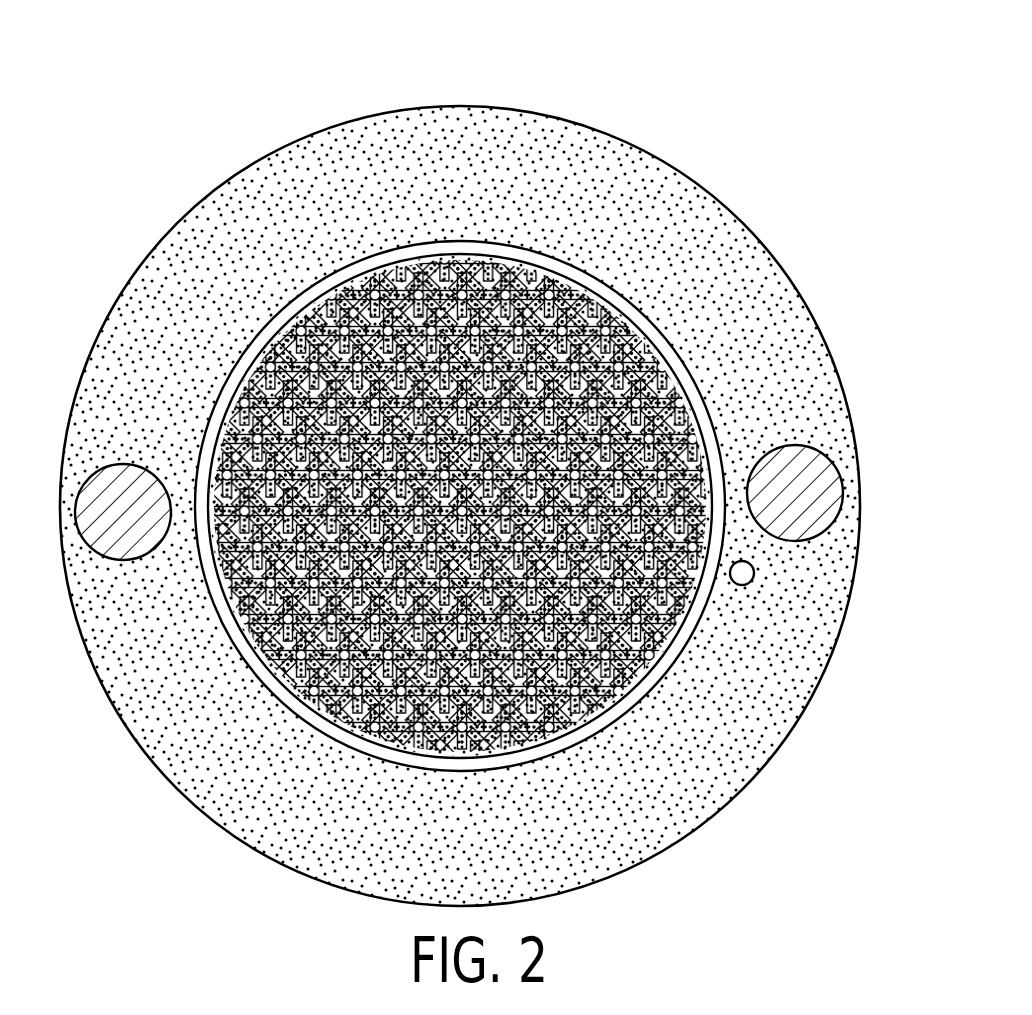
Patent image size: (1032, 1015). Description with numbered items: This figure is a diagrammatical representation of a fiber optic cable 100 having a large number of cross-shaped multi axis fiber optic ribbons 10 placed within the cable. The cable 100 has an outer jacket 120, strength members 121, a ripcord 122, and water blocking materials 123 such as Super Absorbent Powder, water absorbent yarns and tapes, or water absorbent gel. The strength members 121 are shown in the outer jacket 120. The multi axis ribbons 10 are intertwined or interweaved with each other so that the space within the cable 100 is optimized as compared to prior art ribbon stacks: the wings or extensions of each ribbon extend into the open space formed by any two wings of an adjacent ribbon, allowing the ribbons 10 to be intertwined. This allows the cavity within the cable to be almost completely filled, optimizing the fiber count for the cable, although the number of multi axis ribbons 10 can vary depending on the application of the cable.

The fiber optic cable 100 is at (489, 457).
The outer jacket 120 is at (410, 108).
The multi axis ribbons 10 is at (553, 296).
The strength members 121 is at (843, 484).
The ripcord 122 is at (754, 574).
The water blocking materials 123 is at (655, 660).